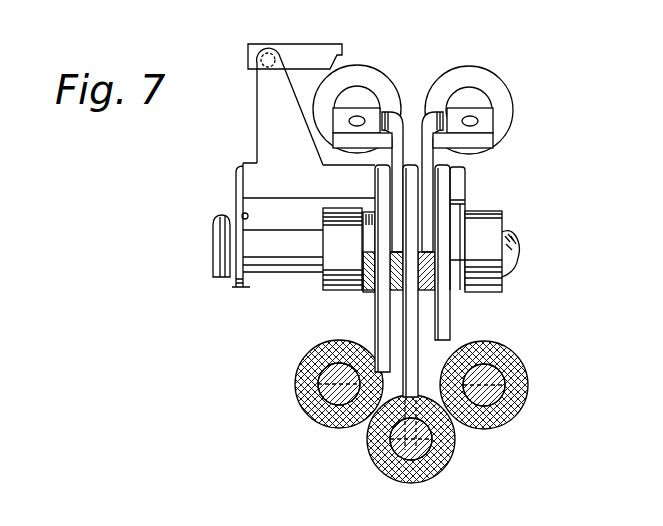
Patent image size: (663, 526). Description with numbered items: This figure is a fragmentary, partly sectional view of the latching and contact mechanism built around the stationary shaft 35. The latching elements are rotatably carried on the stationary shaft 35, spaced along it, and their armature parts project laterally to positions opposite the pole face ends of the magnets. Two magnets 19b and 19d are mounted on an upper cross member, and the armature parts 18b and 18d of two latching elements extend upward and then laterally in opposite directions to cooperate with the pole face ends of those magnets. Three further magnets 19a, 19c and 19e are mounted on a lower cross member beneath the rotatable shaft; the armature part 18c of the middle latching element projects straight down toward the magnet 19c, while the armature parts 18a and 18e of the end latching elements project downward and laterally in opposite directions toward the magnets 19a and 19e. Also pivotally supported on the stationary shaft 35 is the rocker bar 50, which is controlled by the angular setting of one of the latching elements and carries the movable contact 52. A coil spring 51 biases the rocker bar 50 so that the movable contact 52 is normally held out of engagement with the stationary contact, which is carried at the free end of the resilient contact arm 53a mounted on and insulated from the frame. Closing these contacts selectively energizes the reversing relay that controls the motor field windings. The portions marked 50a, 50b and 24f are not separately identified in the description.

The lever arm 24f is at (411, 82).
The movable contact 52 is at (277, 44).
The resilient contact arm 53a is at (310, 46).
The housing side wall 50b is at (232, 197).
The coil spring 51 is at (223, 222).
The rocker bar 50 is at (312, 190).
The housing bracket 50a is at (465, 194).
The stationary shaft 35 is at (505, 238).
The magnet 19d is at (368, 66).
The magnet 19b is at (503, 79).
The armature part 18d is at (400, 112).
The armature part 18b is at (484, 144).
The armature part 18e is at (375, 322).
The armature part 18c is at (412, 343).
The armature part 18a is at (450, 318).
The magnet 19e is at (322, 425).
The magnet 19c is at (455, 453).
The magnet 19a is at (527, 371).